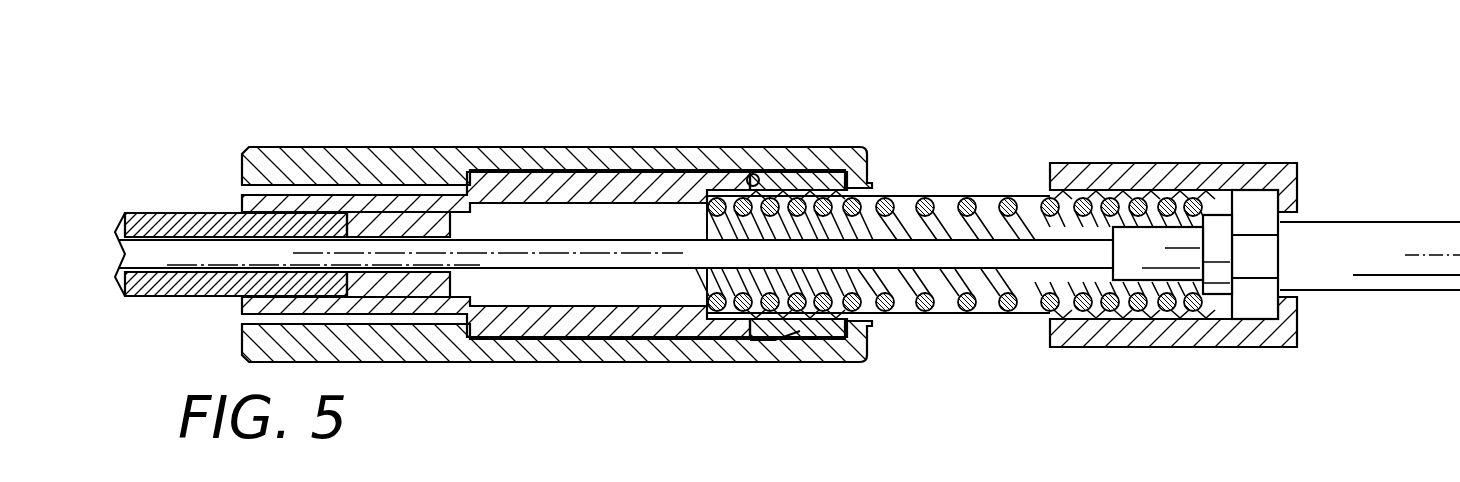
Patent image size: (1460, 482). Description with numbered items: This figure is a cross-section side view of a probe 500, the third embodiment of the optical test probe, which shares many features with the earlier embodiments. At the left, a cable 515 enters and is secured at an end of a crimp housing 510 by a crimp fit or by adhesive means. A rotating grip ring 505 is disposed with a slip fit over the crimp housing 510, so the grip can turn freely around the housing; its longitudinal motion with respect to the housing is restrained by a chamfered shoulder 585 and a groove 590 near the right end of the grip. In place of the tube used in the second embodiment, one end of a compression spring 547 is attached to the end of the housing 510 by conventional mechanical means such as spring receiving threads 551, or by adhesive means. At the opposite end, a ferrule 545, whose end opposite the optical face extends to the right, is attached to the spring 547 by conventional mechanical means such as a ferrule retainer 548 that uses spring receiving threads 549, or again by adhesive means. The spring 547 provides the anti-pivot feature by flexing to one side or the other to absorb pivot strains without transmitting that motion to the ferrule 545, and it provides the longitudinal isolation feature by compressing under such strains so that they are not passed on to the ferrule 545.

The probe 500 is at (527, 130).
The rotating grip ring 505 is at (379, 147).
The crimp housing 510 is at (630, 172).
The cable 515 is at (171, 203).
The ferrule 545 is at (1390, 233).
The compression spring 547 is at (975, 188).
The ferrule retainer 548 is at (1237, 185).
The spring receiving threads 549 is at (1109, 188).
The spring receiving threads 551 is at (818, 320).
The chamfered shoulder 585 is at (830, 172).
The groove 590 is at (747, 177).